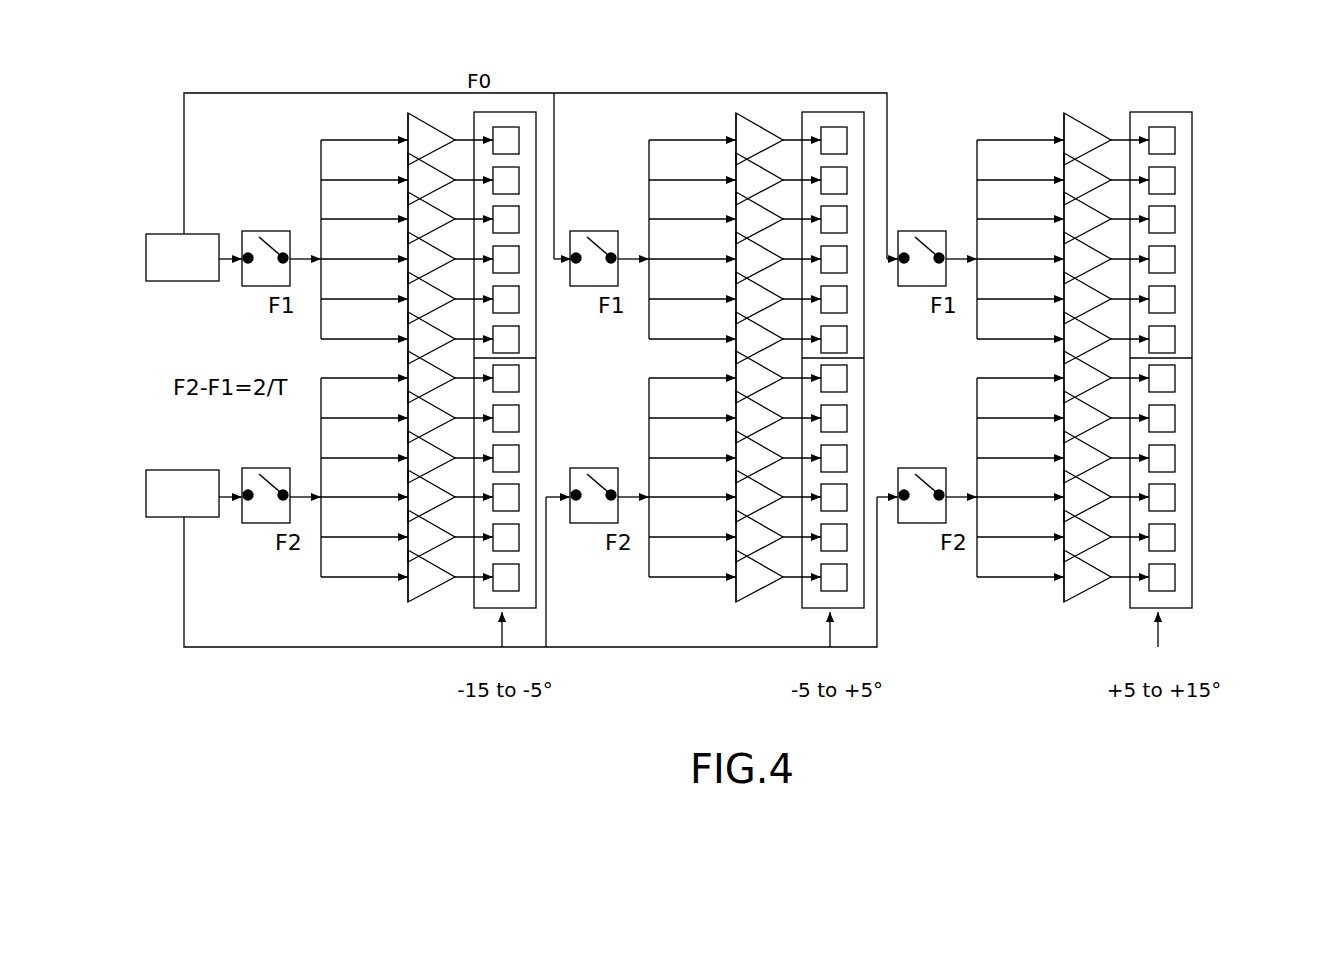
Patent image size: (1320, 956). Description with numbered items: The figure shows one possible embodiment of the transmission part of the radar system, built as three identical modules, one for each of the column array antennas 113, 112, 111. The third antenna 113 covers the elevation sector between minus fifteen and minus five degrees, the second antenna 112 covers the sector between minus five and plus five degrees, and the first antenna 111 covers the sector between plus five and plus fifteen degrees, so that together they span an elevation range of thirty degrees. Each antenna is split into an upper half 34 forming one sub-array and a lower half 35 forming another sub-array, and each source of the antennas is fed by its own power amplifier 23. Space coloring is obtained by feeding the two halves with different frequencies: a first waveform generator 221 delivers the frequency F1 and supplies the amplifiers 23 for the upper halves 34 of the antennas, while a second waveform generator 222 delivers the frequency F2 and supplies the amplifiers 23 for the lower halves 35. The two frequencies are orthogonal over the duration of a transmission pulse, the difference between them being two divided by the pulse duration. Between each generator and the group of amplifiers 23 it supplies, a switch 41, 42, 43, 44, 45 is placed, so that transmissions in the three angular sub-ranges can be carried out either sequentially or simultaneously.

The first waveform generator 221 is at (177, 234).
The second waveform generator 222 is at (180, 470).
The switch 41 is at (259, 287).
The switch 42 is at (258, 523).
The switch 43 is at (582, 231).
The switch 44 is at (603, 522).
The switch 45 is at (905, 231).
The power amplifier 23 is at (417, 130).
The third antenna 113 is at (508, 112).
The second antenna 112 is at (843, 112).
The first antenna 111 is at (1165, 112).
The upper half of antenna 34 is at (536, 320).
The lower half of antenna 35 is at (536, 397).